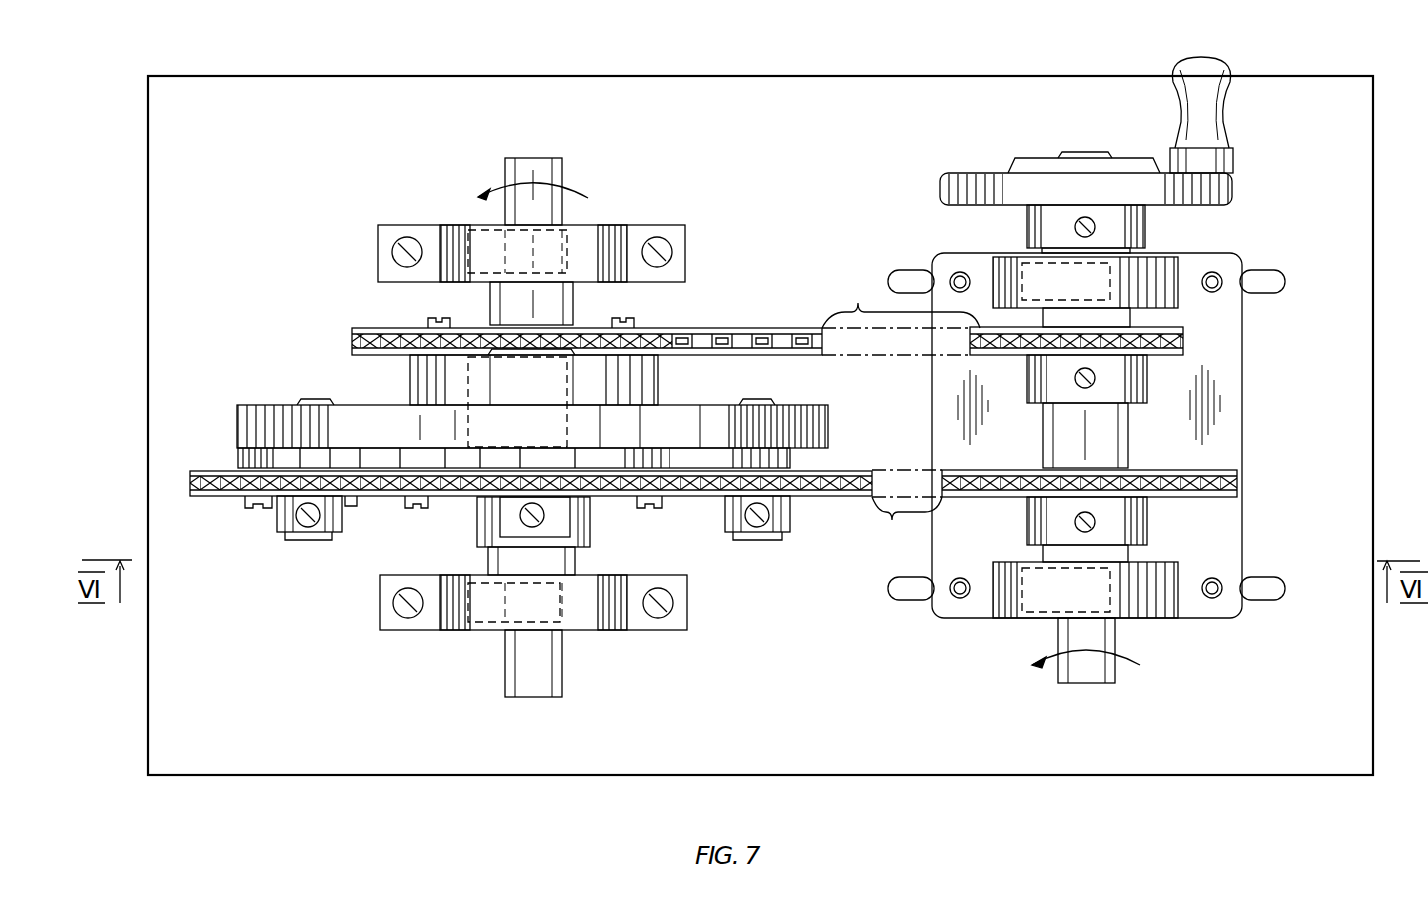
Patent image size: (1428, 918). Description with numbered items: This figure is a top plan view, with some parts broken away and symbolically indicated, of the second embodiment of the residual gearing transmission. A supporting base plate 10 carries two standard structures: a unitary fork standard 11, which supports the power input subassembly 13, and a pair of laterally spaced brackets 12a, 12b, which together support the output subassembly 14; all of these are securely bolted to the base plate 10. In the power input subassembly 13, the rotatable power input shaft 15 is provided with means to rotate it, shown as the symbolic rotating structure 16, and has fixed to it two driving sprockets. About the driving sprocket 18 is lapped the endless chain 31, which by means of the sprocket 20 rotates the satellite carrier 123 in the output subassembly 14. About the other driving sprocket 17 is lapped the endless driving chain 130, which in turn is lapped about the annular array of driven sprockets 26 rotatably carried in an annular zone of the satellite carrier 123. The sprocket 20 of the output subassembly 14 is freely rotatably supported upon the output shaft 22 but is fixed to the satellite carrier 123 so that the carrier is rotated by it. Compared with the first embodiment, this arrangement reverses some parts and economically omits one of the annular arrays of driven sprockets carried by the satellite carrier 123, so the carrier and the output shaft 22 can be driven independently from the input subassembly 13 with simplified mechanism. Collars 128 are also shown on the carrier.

The base plate 10 is at (320, 74).
The standard structure 11 is at (1236, 630).
The bracket 12a is at (398, 640).
The bracket 12b is at (682, 223).
The power input subassembly 13 is at (1082, 146).
The output subassembly 14 is at (527, 150).
The power input shaft 15 is at (1064, 692).
The rotating structure 16 is at (954, 168).
The driving sprocket 17 is at (1232, 484).
The driving sprocket 18 is at (1165, 342).
The sprocket 20 is at (352, 340).
The output shaft 22 is at (511, 705).
The driven sprockets 26 is at (500, 497).
The endless chain 31 is at (901, 313).
The satellite carrier 123 is at (235, 422).
The collar flange 128 is at (317, 404).
The endless driving chain 130 is at (907, 514).